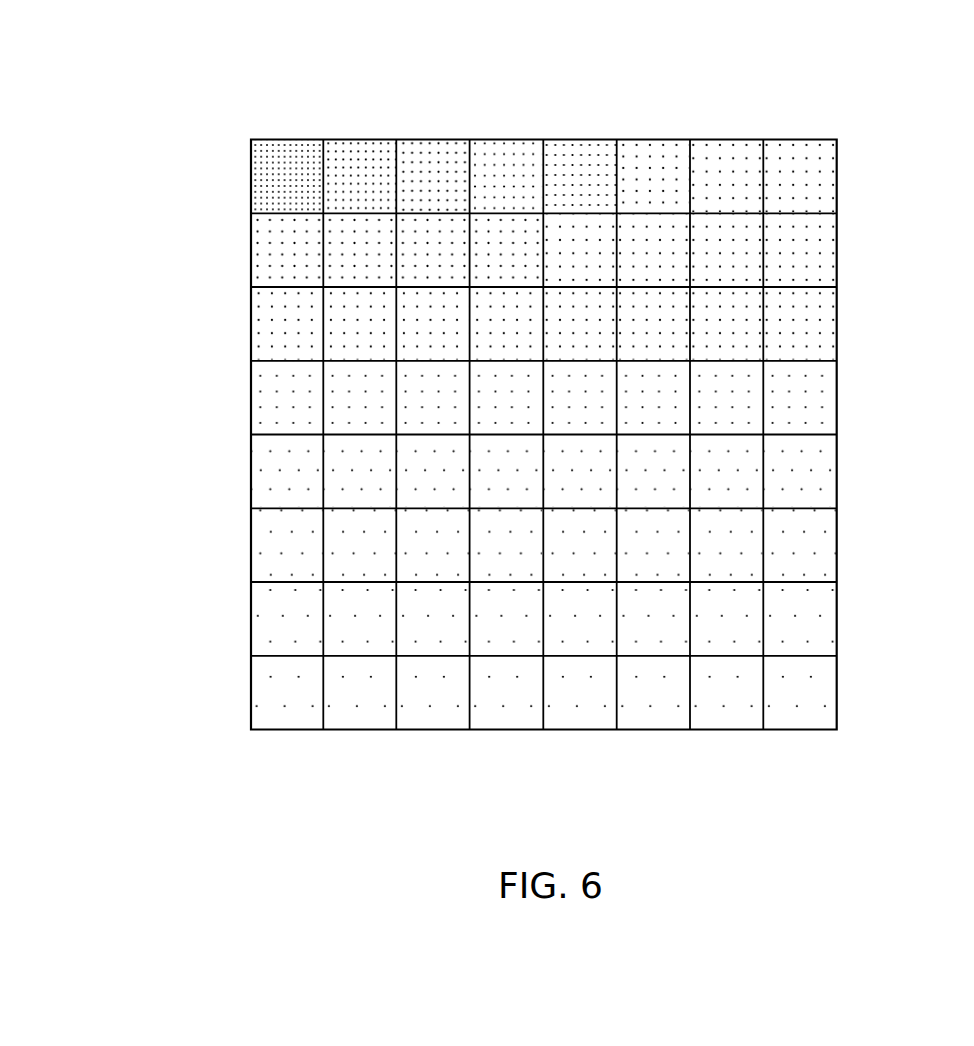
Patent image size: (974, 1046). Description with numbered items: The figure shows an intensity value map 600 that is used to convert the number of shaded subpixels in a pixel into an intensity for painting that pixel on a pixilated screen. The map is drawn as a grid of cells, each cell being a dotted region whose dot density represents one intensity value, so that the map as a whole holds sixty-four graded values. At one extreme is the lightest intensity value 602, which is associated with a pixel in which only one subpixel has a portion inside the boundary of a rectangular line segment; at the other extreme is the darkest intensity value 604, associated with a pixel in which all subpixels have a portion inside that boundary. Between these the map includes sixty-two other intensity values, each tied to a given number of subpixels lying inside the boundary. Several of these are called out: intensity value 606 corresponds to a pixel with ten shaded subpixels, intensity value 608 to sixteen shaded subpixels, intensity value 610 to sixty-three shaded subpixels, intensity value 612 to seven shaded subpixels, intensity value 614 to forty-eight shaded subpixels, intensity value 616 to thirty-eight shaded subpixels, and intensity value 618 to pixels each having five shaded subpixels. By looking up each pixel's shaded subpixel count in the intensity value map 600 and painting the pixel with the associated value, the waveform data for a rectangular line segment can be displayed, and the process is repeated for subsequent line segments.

The intensity value map 600 is at (212, 84).
The lightest intensity value 602 is at (838, 690).
The darkest intensity value 604 is at (263, 185).
The intensity value 606 is at (731, 627).
The intensity value 608 is at (265, 633).
The intensity value 610 is at (373, 150).
The intensity value 612 is at (370, 722).
The intensity value 614 is at (264, 332).
The intensity value 616 is at (437, 414).
The intensity value 618 is at (525, 722).